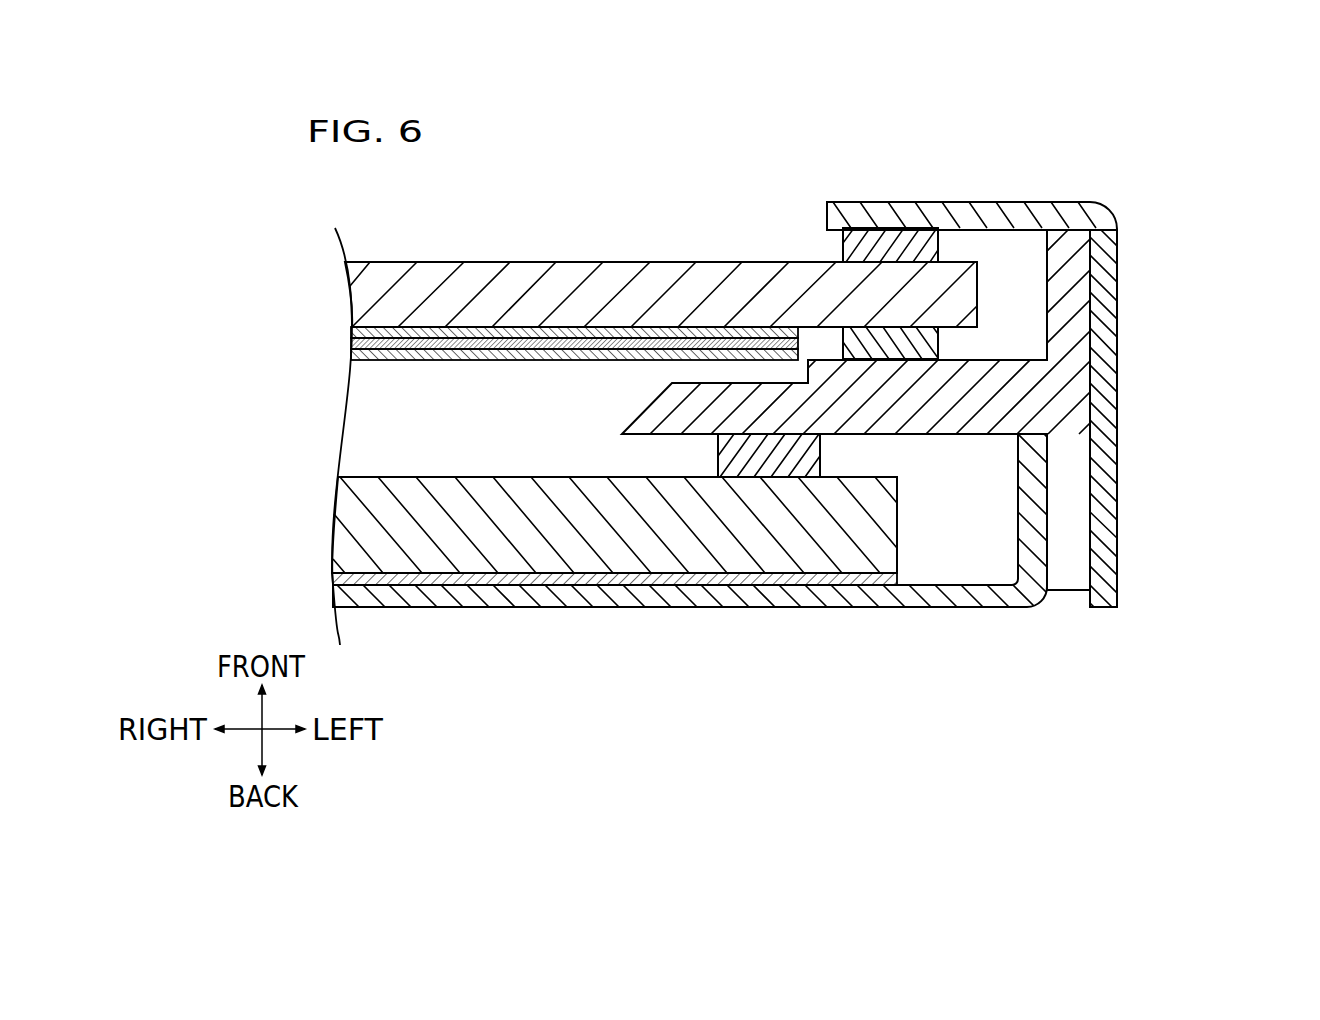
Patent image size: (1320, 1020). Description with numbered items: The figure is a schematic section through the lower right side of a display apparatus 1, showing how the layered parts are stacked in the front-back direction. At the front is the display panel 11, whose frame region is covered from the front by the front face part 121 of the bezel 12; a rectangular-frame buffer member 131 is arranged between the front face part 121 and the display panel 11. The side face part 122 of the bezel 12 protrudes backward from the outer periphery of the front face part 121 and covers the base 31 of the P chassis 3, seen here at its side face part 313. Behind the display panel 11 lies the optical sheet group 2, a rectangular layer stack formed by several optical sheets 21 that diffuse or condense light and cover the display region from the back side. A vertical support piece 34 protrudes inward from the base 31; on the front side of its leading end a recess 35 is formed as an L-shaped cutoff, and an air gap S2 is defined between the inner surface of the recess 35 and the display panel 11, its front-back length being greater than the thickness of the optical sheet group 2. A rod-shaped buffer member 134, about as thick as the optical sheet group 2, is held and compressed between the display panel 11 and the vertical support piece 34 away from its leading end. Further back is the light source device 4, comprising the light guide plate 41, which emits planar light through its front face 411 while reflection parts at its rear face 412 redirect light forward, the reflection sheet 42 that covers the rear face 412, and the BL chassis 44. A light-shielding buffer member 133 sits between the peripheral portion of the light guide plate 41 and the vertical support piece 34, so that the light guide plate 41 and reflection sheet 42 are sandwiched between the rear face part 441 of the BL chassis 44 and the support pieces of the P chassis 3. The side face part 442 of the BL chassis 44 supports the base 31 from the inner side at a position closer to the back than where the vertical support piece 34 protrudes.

The display apparatus 1 is at (1233, 105).
The optical sheet group 2 is at (603, 208).
The optical sheet 21 is at (428, 332).
The P chassis 3 is at (1213, 320).
The base 31 is at (1127, 410).
The side face part 313 is at (1068, 307).
The vertical support piece 34 is at (975, 398).
The recess 35 is at (712, 383).
The light source device 4 is at (663, 614).
The light guide plate 41 is at (423, 503).
The front face 411 is at (512, 477).
The rear face 412 is at (593, 580).
The reflection sheet 42 is at (492, 580).
The BL chassis 44 is at (970, 610).
The rear face part 441 is at (871, 600).
The side face part 442 is at (1052, 575).
The display panel 11 is at (655, 272).
The bezel 12 is at (1047, 202).
The front face part 121 is at (995, 212).
The side face part 122 is at (1113, 290).
The buffer member 131 is at (928, 249).
The buffer member 133 is at (723, 453).
The buffer member 134 is at (928, 341).
The air gap S2 is at (752, 373).